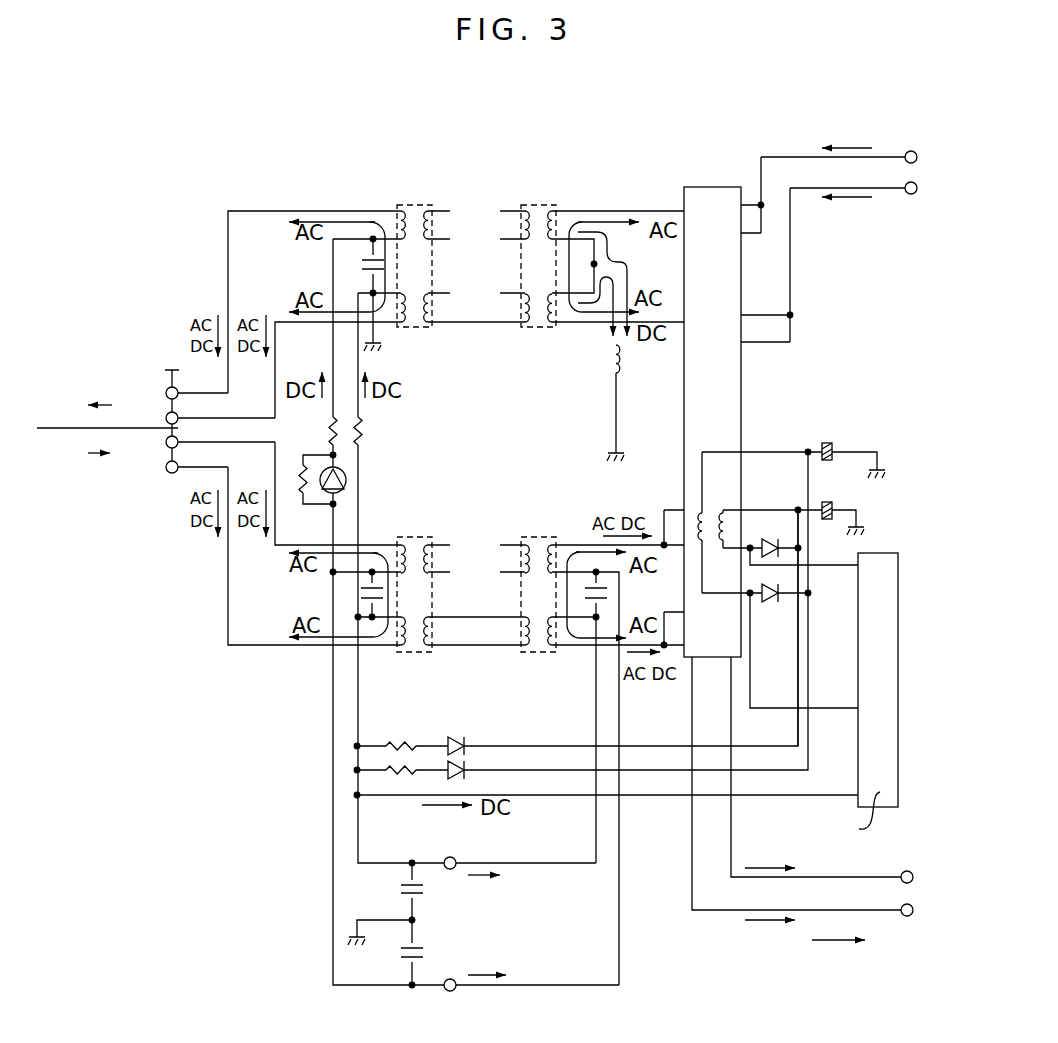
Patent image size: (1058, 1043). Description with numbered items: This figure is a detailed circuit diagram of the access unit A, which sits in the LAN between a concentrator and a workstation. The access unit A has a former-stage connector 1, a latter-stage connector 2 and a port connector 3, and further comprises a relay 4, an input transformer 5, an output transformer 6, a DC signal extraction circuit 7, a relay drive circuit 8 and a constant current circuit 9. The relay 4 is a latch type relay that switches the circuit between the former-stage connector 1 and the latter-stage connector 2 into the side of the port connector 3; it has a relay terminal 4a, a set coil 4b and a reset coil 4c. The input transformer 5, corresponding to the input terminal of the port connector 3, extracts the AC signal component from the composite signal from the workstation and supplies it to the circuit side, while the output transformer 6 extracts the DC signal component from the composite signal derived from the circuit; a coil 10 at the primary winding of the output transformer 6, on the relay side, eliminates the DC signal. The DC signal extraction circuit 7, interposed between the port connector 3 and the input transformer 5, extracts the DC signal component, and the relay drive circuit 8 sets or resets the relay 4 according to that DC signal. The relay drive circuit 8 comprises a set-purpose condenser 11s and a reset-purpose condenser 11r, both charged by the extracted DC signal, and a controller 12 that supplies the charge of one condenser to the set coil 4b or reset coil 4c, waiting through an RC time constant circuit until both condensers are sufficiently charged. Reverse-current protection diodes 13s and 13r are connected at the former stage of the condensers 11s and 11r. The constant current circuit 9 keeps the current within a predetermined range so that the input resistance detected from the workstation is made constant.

The access unit A is at (287, 184).
The former-stage connector 1 is at (909, 205).
The latter-stage connector 2 is at (907, 922).
The port connector 3 is at (172, 478).
The relay 4 is at (684, 187).
The relay terminal 4a is at (704, 225).
The set coil 4b is at (704, 513).
The reset coil 4c is at (727, 512).
The input transformer 5 is at (550, 668).
The output transformer 6 is at (555, 190).
The DC signal extraction circuit 7 is at (363, 589).
The relay drive circuit 8 is at (806, 514).
The constant current circuit 9 is at (452, 870).
The coil 10 is at (624, 368).
The set-purpose condenser 11s is at (831, 445).
The reset-purpose condenser 11r is at (838, 499).
The controller 12 is at (875, 562).
The reverse-current protection diode 13r is at (768, 535).
The reverse-current protection diode 13s is at (770, 603).